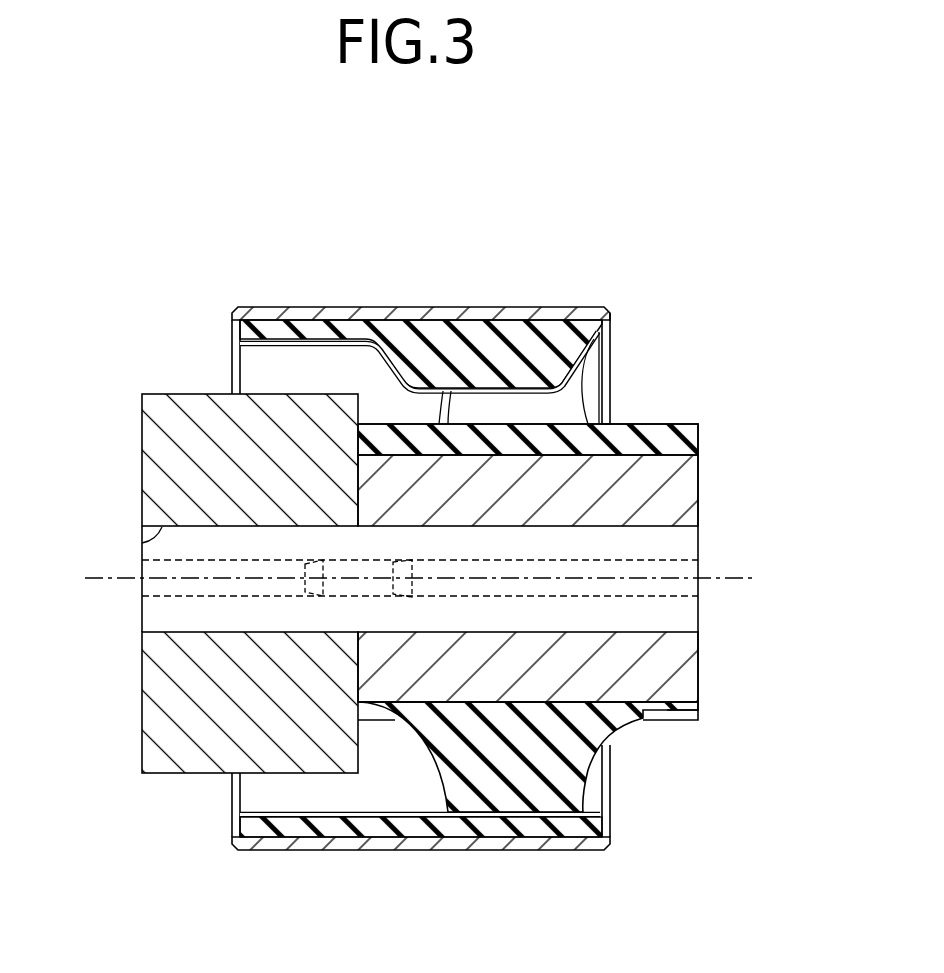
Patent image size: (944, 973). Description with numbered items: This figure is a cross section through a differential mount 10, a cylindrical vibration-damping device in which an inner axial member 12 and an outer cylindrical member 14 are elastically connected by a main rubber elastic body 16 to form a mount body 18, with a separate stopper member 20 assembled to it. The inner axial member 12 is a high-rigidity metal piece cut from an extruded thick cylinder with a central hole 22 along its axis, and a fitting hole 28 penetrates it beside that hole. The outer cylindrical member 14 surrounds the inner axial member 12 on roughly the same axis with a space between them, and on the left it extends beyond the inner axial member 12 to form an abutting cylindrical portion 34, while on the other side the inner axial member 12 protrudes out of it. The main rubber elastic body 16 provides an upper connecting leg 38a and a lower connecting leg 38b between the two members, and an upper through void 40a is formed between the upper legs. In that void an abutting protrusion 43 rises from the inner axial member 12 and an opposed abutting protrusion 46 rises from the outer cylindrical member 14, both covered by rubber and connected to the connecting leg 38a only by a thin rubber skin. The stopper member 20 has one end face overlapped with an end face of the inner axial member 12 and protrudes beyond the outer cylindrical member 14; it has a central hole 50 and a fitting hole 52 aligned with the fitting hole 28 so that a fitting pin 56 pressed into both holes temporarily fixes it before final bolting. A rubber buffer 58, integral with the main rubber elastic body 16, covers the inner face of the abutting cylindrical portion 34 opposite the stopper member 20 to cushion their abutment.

The differential mount 10 is at (697, 236).
The inner axial member 12 is at (704, 661).
The outer cylindrical member 14 is at (590, 303).
The main rubber elastic body 16 is at (542, 846).
The mount body 18 is at (650, 392).
The stopper member 20 is at (177, 388).
The central hole 22 is at (685, 526).
The fitting hole 28 is at (688, 597).
The abutting cylindrical portion 34 is at (283, 312).
The upper connecting leg 38a is at (510, 407).
The lower connecting leg 38b is at (508, 766).
The upper through void 40a is at (476, 393).
The abutting protrusion 43 is at (687, 440).
The abutting protrusion 46 is at (425, 362).
The central hole 50 is at (142, 543).
The fitting hole 52 is at (142, 586).
The fitting pin 56 is at (335, 590).
The rubber buffer 58 is at (308, 828).